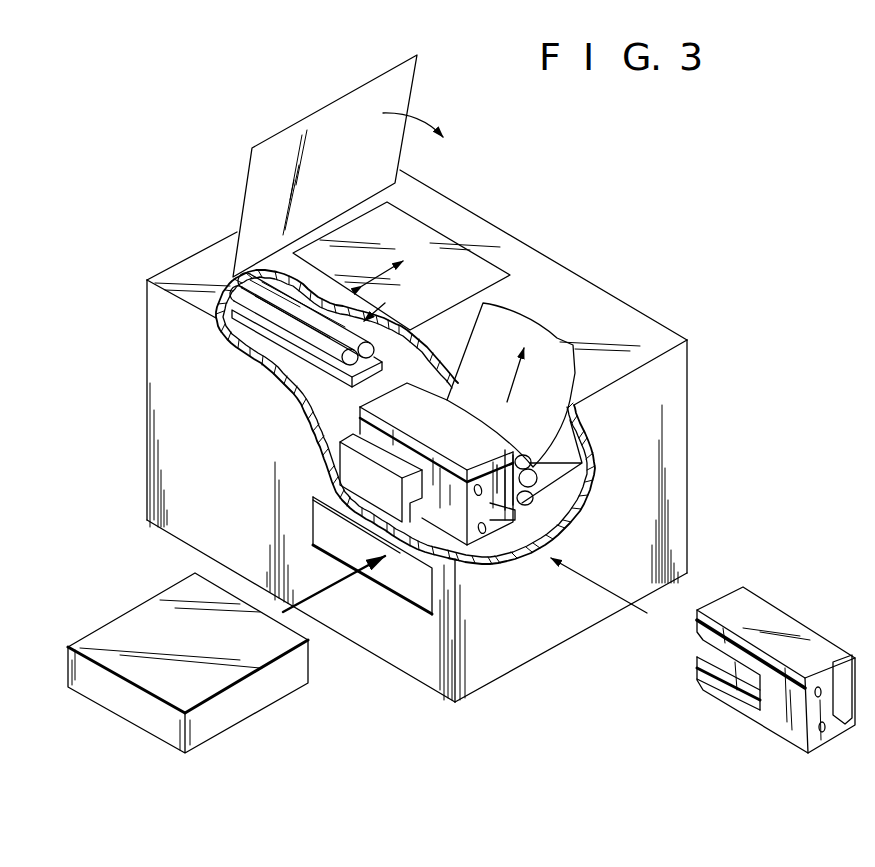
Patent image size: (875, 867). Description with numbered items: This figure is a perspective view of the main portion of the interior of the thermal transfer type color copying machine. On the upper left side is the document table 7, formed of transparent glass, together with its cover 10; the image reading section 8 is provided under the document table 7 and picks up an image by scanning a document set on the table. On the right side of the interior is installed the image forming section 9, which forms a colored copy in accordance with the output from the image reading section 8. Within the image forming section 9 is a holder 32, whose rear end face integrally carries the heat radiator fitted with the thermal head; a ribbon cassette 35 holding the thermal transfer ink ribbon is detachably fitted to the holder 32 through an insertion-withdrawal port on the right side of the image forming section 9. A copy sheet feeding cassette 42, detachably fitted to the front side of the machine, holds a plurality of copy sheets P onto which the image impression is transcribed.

The cover 10 is at (400, 103).
The document table 7 is at (430, 233).
The image reading section 8 is at (337, 330).
The copy sheet P is at (552, 352).
The image forming section 9 is at (541, 500).
The holder 32 is at (342, 465).
The ribbon cassette 35 is at (775, 620).
The copy sheet feeding cassette 42 is at (242, 709).